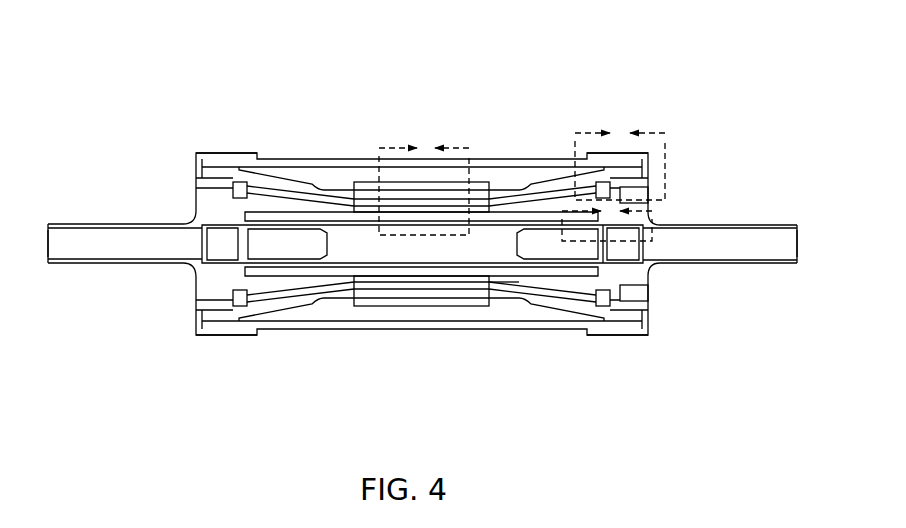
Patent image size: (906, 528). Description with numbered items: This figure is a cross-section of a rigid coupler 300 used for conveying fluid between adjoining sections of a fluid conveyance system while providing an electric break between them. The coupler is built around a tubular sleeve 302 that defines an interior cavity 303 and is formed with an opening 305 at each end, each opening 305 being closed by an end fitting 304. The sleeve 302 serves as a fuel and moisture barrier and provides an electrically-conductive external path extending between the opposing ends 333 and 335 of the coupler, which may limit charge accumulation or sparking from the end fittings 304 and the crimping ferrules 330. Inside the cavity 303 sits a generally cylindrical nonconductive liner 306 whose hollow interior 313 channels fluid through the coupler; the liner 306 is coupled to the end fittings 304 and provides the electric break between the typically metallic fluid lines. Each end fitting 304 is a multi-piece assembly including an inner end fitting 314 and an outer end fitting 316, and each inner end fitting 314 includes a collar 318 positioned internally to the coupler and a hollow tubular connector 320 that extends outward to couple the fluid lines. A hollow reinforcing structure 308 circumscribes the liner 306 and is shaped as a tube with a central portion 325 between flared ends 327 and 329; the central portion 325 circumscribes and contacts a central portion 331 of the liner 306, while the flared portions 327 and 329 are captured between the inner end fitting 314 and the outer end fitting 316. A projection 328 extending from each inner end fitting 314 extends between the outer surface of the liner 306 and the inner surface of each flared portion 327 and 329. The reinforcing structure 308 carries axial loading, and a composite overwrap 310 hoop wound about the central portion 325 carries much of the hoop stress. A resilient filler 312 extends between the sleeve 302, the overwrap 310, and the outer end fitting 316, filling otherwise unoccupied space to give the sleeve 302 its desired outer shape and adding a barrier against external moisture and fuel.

The rigid coupler 300 is at (150, 72).
The tubular sleeve 302 is at (503, 163).
The interior cavity 303 is at (416, 202).
The end fitting 304 is at (622, 235).
The opening 305 is at (194, 193).
The nonconductive liner 306 is at (370, 211).
The reinforcing structure 308 is at (280, 197).
The overwrap 310 is at (457, 192).
The resilient filler 312 is at (542, 317).
The hollow interior 313 is at (372, 255).
The inner end fitting 314 is at (637, 275).
The outer end fitting 316 is at (588, 308).
The collar 318 is at (650, 217).
The connector 320 is at (87, 223).
The central portion 325 is at (448, 283).
The flared end 327 is at (272, 300).
The projection 328 is at (572, 195).
The flared end 329 is at (510, 283).
The crimping ferrule 330 is at (226, 153).
The central portion 331 is at (398, 273).
The end 333 is at (48, 235).
The end 335 is at (797, 235).